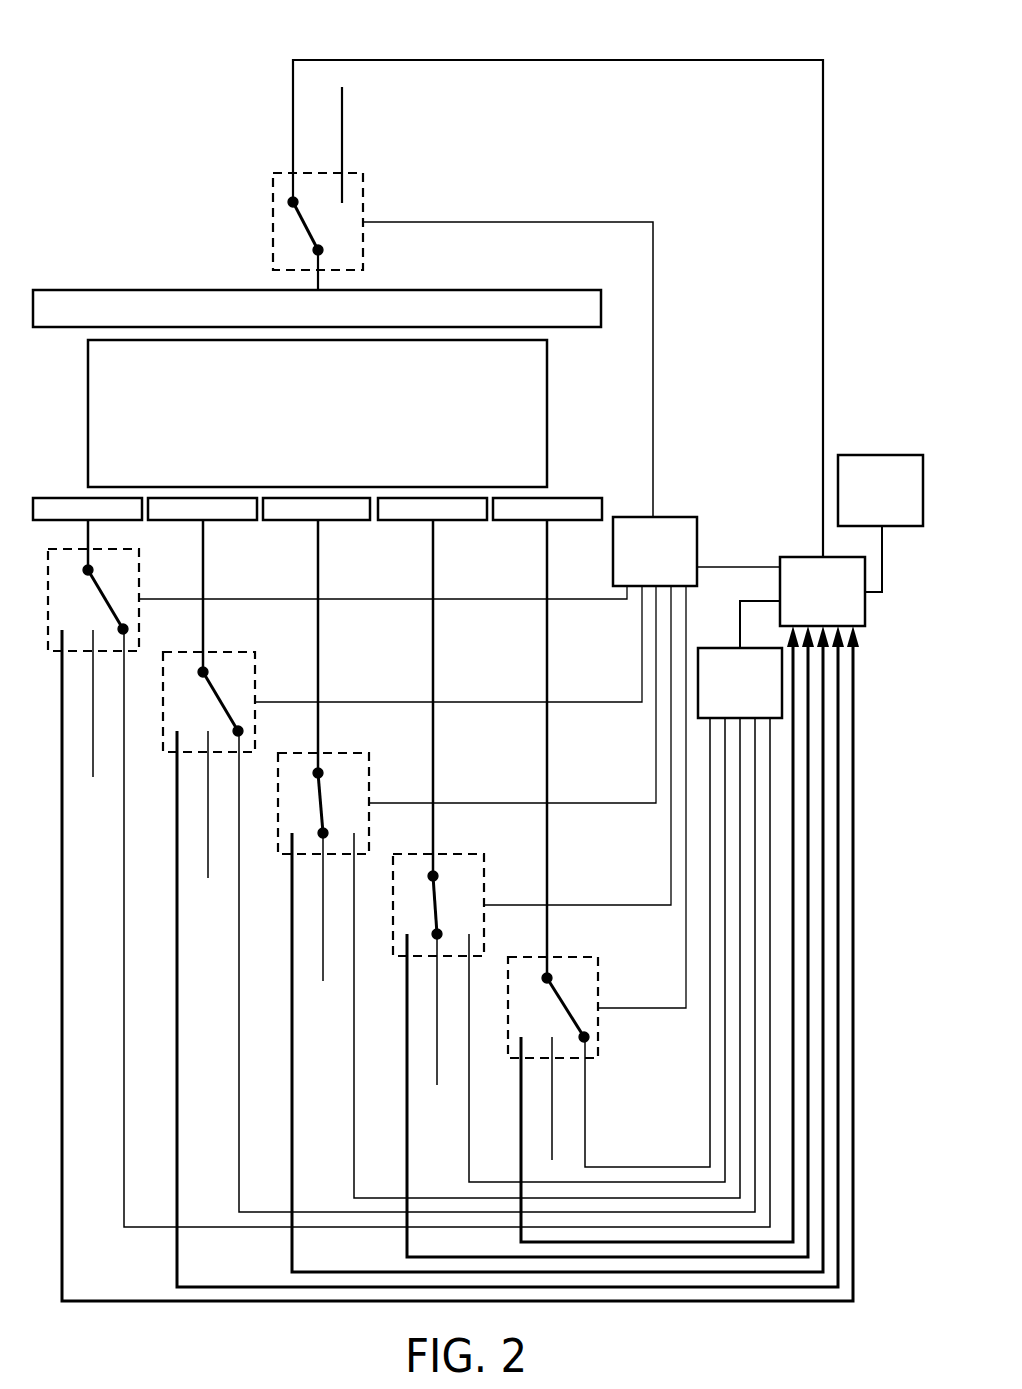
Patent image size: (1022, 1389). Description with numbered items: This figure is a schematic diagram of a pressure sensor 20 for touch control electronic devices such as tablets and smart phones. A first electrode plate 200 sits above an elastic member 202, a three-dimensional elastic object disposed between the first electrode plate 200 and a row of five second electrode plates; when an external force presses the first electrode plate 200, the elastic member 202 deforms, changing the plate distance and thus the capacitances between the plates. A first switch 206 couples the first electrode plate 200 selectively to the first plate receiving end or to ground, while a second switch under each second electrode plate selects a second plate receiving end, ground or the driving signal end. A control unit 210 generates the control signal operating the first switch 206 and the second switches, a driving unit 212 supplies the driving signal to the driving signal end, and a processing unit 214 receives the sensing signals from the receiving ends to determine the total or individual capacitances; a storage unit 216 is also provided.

The pressure sensor 20 is at (146, 76).
The first electrode plate 200 is at (340, 325).
The elastic member 202 is at (340, 423).
The first switch 206 is at (273, 224).
The control unit 210 is at (677, 562).
The driving unit 212 is at (762, 697).
The processing unit 214 is at (845, 605).
The storage unit 216 is at (902, 504).